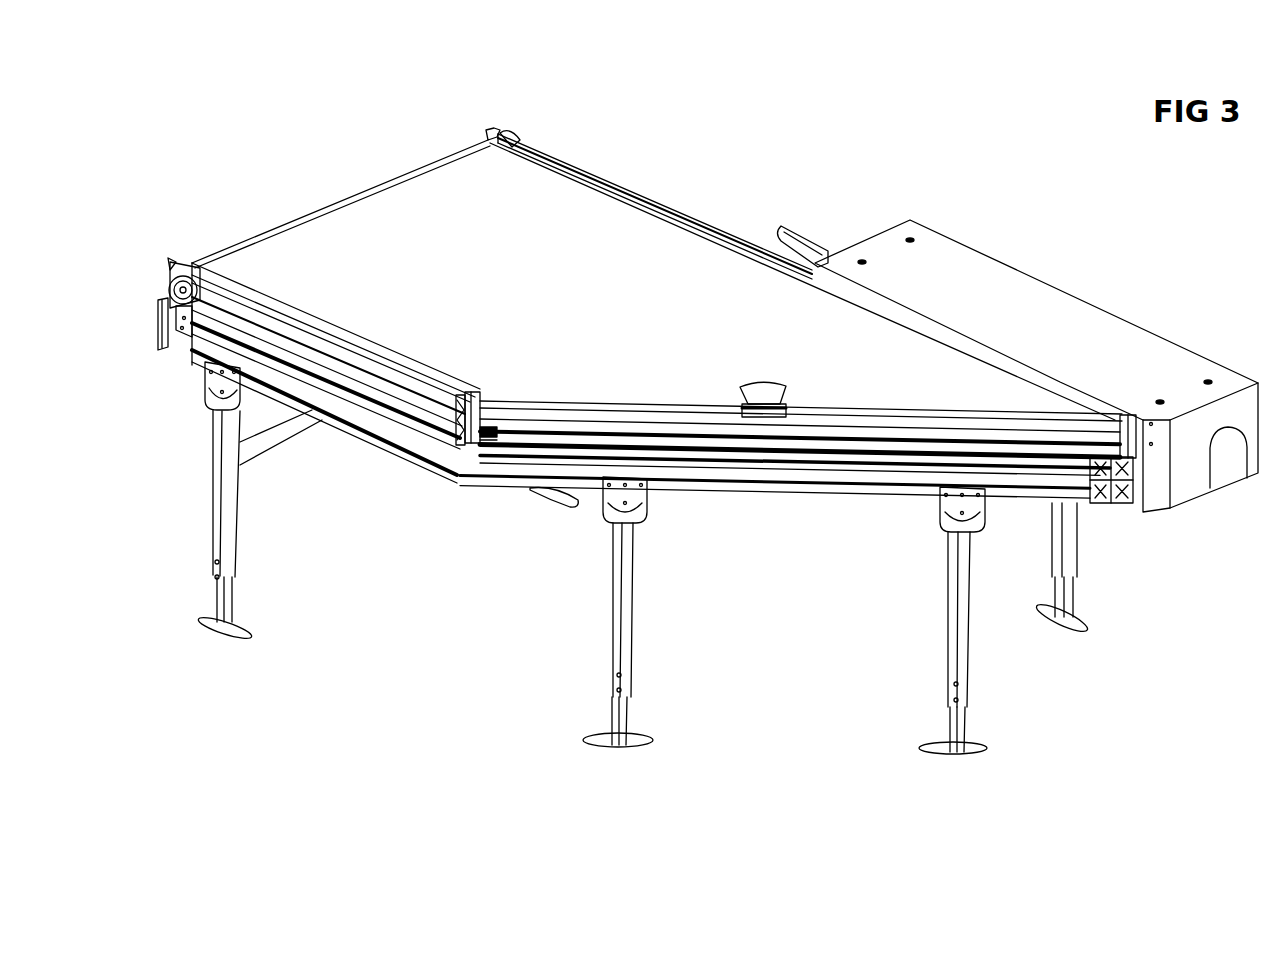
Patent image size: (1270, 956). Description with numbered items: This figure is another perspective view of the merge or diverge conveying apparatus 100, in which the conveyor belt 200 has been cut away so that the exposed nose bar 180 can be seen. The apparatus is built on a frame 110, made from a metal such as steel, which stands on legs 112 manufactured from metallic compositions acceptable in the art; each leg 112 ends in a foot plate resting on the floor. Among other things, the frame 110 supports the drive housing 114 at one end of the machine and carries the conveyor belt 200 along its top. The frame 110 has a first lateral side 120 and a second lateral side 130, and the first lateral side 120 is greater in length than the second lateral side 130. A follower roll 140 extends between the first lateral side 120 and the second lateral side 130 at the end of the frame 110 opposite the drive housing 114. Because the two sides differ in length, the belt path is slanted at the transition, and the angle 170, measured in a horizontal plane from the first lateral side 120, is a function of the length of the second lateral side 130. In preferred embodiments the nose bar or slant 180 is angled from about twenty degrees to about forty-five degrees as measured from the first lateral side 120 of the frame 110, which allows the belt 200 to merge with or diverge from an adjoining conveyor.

The merge or diverge conveying apparatus 100 is at (787, 200).
The frame 110 is at (404, 440).
The legs 112 is at (240, 562).
The drive housing 114 is at (1088, 350).
The first lateral side 120 is at (663, 195).
The second lateral side 130 is at (325, 362).
The follower roll 140 is at (187, 263).
The angle 170 is at (917, 387).
The nose bar 180 is at (493, 433).
The conveyor belt 200 is at (462, 173).